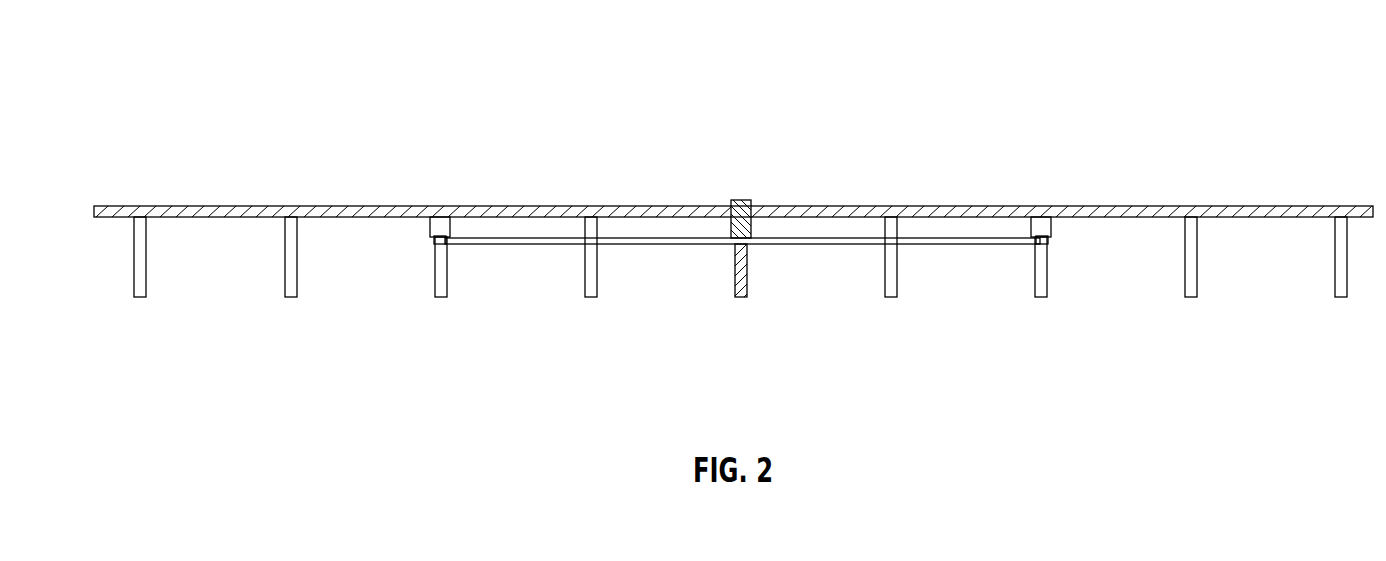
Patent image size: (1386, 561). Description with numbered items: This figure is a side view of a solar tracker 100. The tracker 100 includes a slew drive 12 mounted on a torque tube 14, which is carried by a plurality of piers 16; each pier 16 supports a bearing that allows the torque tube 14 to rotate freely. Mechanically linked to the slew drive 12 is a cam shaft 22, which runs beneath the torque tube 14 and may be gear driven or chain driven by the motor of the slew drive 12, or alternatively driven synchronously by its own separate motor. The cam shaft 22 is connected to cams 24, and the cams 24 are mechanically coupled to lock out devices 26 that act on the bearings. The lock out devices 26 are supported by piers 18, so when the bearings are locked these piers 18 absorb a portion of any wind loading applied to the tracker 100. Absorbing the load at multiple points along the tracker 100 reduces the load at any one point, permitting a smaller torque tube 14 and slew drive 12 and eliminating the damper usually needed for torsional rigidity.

The solar tracker 100 is at (1260, 82).
The slew drive 12 is at (744, 195).
The torque tube 14 is at (965, 206).
The piers 16 is at (145, 322).
The piers 18 is at (448, 268).
The cam shaft 22 is at (831, 250).
The cams 24 is at (432, 240).
The lock out devices 26 is at (444, 208).